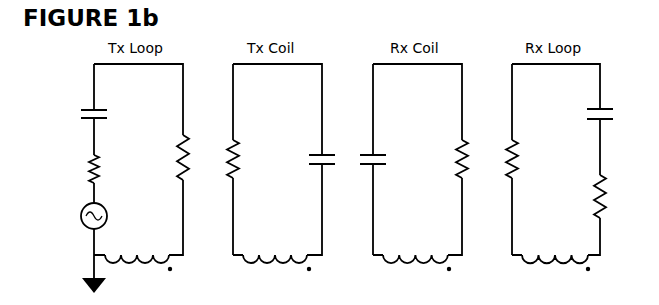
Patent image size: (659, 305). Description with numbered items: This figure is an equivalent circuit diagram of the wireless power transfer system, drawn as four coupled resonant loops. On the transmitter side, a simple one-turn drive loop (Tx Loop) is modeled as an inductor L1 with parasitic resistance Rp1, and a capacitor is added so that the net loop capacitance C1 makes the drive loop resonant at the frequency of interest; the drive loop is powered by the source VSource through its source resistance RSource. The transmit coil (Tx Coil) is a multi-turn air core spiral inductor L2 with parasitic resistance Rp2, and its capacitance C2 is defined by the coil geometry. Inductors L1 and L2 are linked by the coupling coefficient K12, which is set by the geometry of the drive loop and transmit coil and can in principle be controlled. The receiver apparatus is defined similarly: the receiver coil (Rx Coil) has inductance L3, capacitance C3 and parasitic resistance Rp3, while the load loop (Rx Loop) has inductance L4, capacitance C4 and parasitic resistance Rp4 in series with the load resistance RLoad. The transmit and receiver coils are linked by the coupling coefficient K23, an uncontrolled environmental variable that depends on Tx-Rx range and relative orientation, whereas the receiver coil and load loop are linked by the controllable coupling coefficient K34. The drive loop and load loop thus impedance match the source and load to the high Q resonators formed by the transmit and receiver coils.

The net capacitance of the drive loop C1 is at (78, 113).
The parasitic resistance of the drive loop Rp1 is at (167, 142).
The source resistance RSource is at (65, 169).
The source VSource is at (69, 216).
The drive loop inductor L1 is at (138, 252).
The coupling coefficient between the drive loop and transmit coil K12 is at (207, 286).
The parasitic resistance of the transmit coil Rp2 is at (246, 150).
The capacitance of the transmit coil C2 is at (314, 143).
The transmit coil inductor L2 is at (277, 252).
The coupling coefficient between the transmit coil and receiver coil K23 is at (349, 286).
The capacitance of the receiver coil C3 is at (378, 150).
The parasitic resistance of the receiver coil Rp3 is at (446, 139).
The receiver coil inductor L3 is at (417, 252).
The coupling coefficient between the receiver coil and load loop K34 is at (489, 286).
The parasitic resistance of the load loop Rp4 is at (525, 152).
The capacitance of the load loop C4 is at (613, 117).
The load resistance RLoad is at (621, 196).
The load loop inductor L4 is at (556, 252).